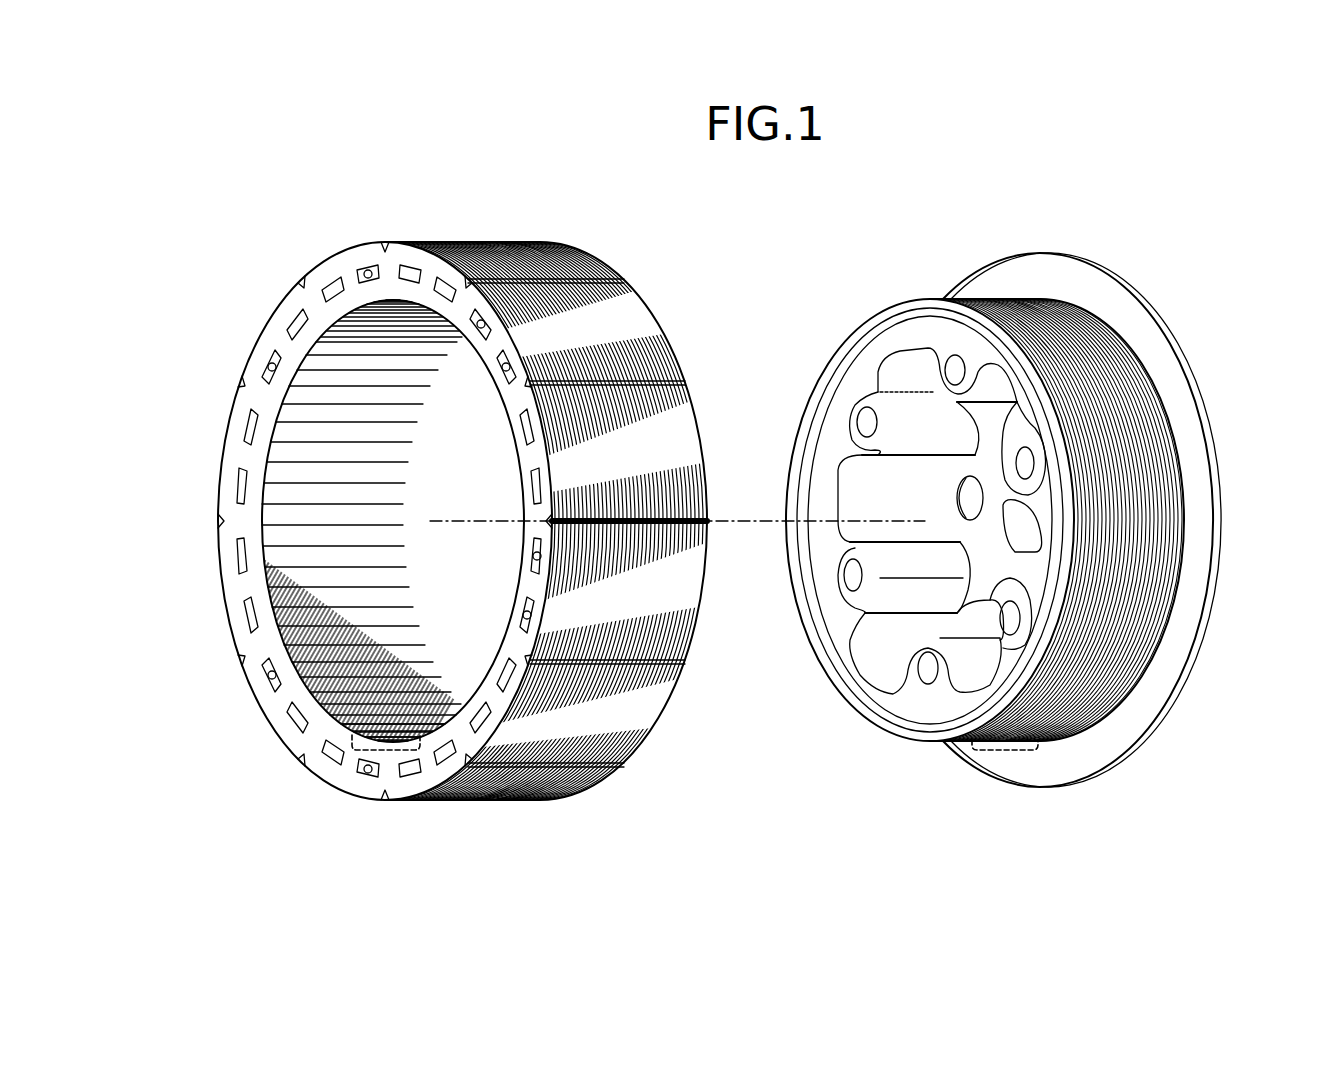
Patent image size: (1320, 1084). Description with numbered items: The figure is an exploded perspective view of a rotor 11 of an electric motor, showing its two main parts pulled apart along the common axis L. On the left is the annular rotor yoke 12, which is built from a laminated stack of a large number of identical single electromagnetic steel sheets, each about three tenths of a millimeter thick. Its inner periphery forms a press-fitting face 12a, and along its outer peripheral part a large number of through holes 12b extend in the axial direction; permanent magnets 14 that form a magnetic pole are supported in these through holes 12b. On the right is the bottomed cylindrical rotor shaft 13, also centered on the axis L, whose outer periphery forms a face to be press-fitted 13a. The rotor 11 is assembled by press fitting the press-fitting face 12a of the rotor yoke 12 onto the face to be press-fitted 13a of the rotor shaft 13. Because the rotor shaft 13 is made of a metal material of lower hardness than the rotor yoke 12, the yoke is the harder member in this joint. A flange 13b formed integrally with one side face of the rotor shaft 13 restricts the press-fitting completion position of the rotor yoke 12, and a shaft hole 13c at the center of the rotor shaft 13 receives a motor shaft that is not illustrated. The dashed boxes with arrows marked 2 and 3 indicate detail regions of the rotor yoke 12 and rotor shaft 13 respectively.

The rotor 11 is at (697, 248).
The rotor yoke 12 is at (676, 320).
The press-fitting face 12a is at (372, 468).
The through holes 12b is at (362, 265).
The rotor shaft 13 is at (816, 325).
The face to be press-fitted 13a is at (1127, 420).
The flange 13b is at (1122, 327).
The shaft hole 13c is at (975, 550).
The permanent magnets 14 is at (325, 280).
The section for FIG. 2 is at (410, 768).
The section for FIG. 3 is at (1028, 772).
The axis L is at (745, 520).